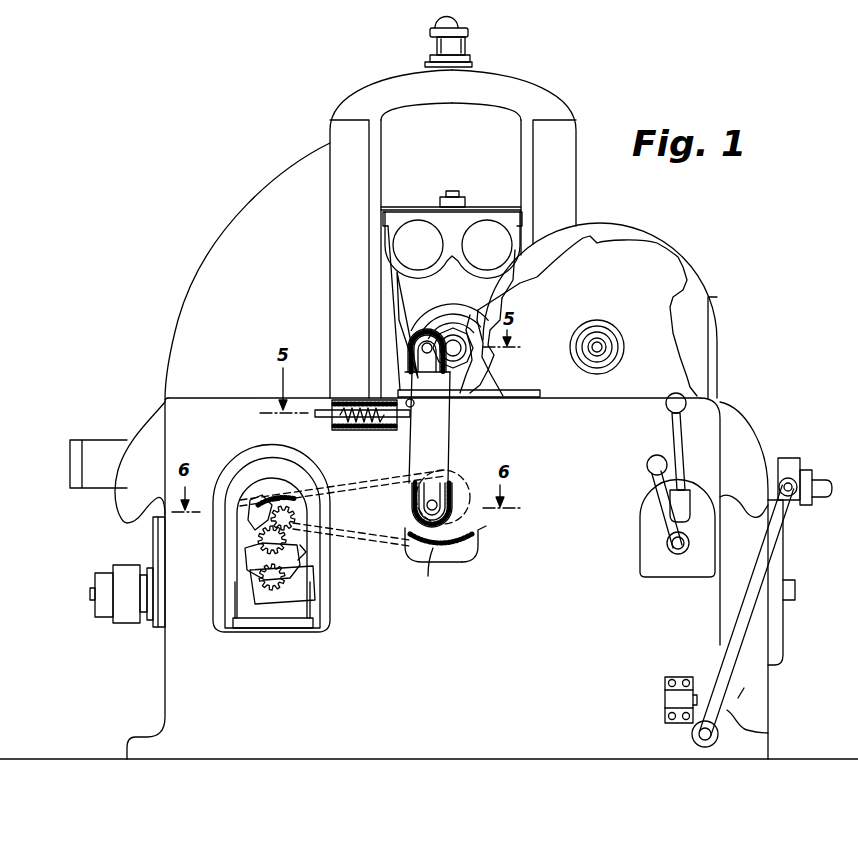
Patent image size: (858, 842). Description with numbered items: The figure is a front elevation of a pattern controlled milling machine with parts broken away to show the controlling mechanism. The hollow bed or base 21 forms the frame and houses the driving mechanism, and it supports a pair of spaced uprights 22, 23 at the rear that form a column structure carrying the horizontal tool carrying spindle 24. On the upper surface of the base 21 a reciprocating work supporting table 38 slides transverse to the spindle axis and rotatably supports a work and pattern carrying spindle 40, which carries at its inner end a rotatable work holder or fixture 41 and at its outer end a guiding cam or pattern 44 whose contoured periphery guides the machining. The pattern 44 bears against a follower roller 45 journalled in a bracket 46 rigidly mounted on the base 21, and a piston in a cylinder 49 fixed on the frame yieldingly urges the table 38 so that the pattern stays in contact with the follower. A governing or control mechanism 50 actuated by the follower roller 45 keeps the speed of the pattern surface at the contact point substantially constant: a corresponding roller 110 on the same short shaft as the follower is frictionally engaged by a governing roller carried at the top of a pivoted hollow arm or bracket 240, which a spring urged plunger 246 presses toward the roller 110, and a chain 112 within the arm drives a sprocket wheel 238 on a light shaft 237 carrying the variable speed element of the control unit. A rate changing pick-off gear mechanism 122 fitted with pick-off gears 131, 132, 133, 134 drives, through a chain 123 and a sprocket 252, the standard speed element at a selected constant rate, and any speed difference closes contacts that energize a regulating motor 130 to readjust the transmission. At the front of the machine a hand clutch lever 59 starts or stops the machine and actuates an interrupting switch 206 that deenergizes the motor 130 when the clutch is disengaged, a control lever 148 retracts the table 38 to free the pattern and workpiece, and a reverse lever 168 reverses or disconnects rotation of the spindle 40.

The hollow bed or base 21 is at (165, 694).
The upright 22 is at (338, 193).
The upright 23 is at (558, 186).
The tool carrying spindle 24 is at (455, 320).
The work supporting table or platen 38 is at (705, 343).
The work and pattern carrying spindle 40 is at (600, 338).
The work holder or supporting fixture 41 is at (700, 279).
The guiding cam or pattern 44 is at (665, 265).
The follower roller 45 is at (470, 352).
The bracket 46 is at (432, 330).
The cylinder 49 is at (93, 455).
The governing or control mechanism 50 is at (392, 475).
The hand clutch lever 59 is at (727, 657).
The roller 110 is at (462, 382).
The chain 112 is at (412, 356).
The rate changing pick-off gear mechanism 122 is at (302, 542).
The chain 123 is at (472, 531).
The regulating motor 130 is at (130, 548).
The pick-off gear 131 is at (253, 590).
The pick-off gear 132 is at (250, 553).
The pick-off gear 133 is at (262, 532).
The pick-off gear 134 is at (305, 512).
The control lever 148 is at (655, 473).
The reverse lever 168 is at (674, 429).
The interrupting switch 206 is at (668, 698).
The shaft 237 is at (414, 515).
The sprocket wheel 238 is at (453, 478).
The hollow arm or bracket 240 is at (450, 431).
The spring urged plunger 246 is at (398, 435).
The sprocket 252 is at (433, 550).